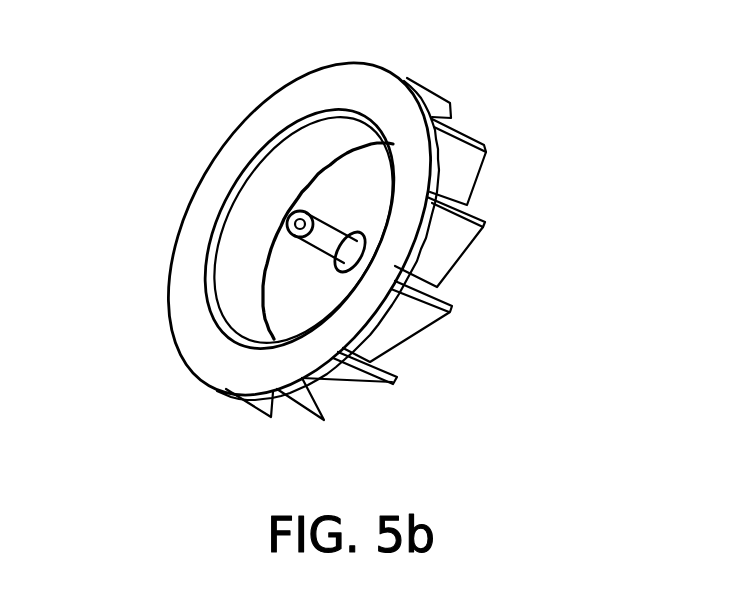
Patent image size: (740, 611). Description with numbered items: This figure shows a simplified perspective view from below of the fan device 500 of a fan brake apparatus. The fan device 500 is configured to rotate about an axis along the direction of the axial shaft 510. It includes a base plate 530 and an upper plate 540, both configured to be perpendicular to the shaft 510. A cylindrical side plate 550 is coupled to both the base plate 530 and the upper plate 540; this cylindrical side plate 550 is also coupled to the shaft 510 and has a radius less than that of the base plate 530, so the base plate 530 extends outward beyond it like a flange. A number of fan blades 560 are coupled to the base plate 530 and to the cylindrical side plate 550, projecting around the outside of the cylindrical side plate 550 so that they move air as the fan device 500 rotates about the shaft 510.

The fan device 500 is at (176, 54).
The axial shaft 510 is at (287, 226).
The base plate 530 is at (208, 318).
The upper plate 540 is at (353, 204).
The cylindrical side plate 550 is at (272, 184).
The fan blades 560 is at (486, 180).